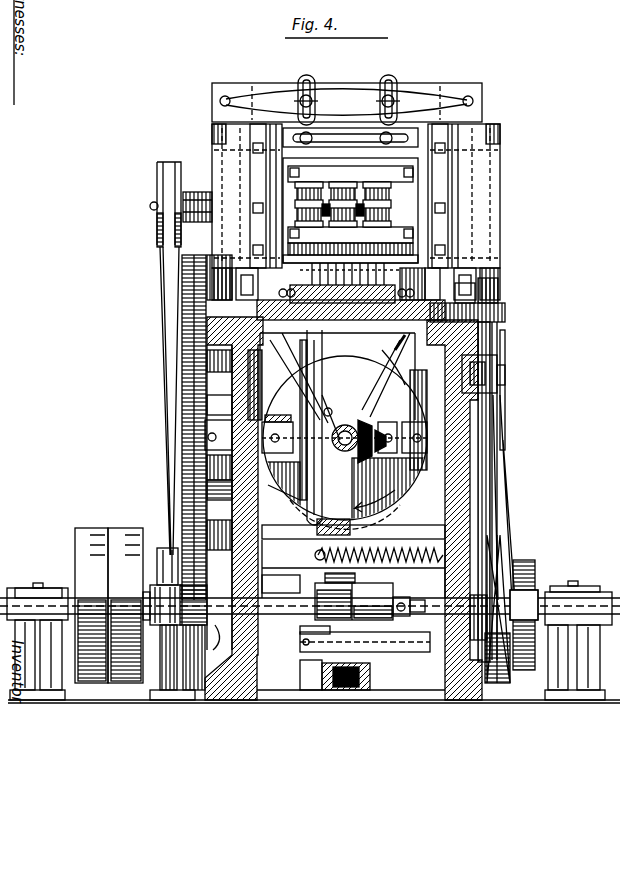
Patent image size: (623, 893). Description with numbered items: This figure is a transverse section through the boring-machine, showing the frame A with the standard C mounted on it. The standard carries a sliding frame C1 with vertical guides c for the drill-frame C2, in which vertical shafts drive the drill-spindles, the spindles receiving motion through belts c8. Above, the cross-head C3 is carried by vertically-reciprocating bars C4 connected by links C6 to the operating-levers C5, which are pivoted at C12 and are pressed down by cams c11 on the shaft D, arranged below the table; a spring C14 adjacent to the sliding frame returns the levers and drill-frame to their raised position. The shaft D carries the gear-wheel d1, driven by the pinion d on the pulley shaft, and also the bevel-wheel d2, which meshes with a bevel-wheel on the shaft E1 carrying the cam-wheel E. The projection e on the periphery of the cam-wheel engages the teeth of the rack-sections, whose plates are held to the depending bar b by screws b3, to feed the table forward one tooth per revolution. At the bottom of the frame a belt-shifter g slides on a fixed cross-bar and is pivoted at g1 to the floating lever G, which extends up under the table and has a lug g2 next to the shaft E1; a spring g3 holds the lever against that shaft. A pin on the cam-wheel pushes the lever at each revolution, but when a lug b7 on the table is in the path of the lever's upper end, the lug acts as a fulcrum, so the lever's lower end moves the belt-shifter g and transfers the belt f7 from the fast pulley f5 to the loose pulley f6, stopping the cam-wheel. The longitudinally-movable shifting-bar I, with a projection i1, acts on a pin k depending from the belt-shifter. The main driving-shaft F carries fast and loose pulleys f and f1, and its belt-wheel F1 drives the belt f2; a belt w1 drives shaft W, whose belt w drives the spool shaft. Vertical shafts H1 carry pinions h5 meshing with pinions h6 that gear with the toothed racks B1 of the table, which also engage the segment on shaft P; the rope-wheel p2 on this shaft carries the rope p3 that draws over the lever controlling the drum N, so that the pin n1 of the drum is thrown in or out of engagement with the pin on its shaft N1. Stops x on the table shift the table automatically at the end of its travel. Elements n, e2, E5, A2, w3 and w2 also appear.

The cross-head C3 is at (448, 93).
The operating-levers C5 is at (306, 78).
The links or connecting-rods C6 is at (297, 100).
The vertically-reciprocating bars C4 is at (400, 130).
The spring C14 is at (215, 132).
The pivot of the operating-levers C12 is at (248, 168).
The standard C is at (480, 132).
The sliding frame C1 is at (345, 182).
The vertical guides c is at (432, 182).
The belts c8 is at (341, 222).
The drill-frame C2 is at (344, 283).
The pinions h6 is at (496, 292).
The pinions h5 is at (504, 312).
The frame A is at (196, 340).
The cam-wheel E is at (341, 442).
The shaft E1 is at (348, 428).
The bevel-wheel d2 is at (380, 428).
The cams c11 is at (349, 434).
The floating lever G is at (296, 564).
The lug g2 is at (328, 417).
The pin n is at (310, 335).
The lug b7 is at (308, 337).
The stops x is at (353, 327).
The bar b is at (356, 329).
The screws b3 is at (361, 345).
The drum N is at (389, 360).
The pin of the drum n1 is at (400, 343).
The roller e2 is at (340, 477).
The shaft D is at (205, 438).
The projection or cam-section e is at (352, 528).
The spring g3 is at (400, 545).
The bracket E5 is at (281, 584).
The belt f7 is at (352, 581).
The loose pulley f6 is at (354, 601).
The fast pulley f5 is at (388, 601).
The belt-shifter g is at (385, 644).
The projection i1 is at (366, 682).
The frame base A2 is at (300, 680).
The pivot g1 is at (330, 686).
The pin k is at (330, 694).
The shifting-bar I is at (358, 692).
The belt w is at (163, 370).
The shaft P is at (168, 378).
The toothed racks B1 is at (190, 318).
The gear-wheel d1 is at (186, 285).
The rope p3 is at (195, 462).
The rope-wheel p2 is at (195, 476).
The vertical shafts H1 is at (186, 500).
The belt guide w3 is at (498, 369).
The shaft of the drum N1 is at (505, 388).
The belt w2 is at (497, 465).
The pinion d is at (213, 643).
The fast pulley f is at (91, 605).
The loose pulley f1 is at (309, 605).
The main driving-shaft F is at (28, 600).
The belt-wheel F1 is at (510, 530).
The belt f2 is at (511, 603).
The belt w1 is at (530, 587).